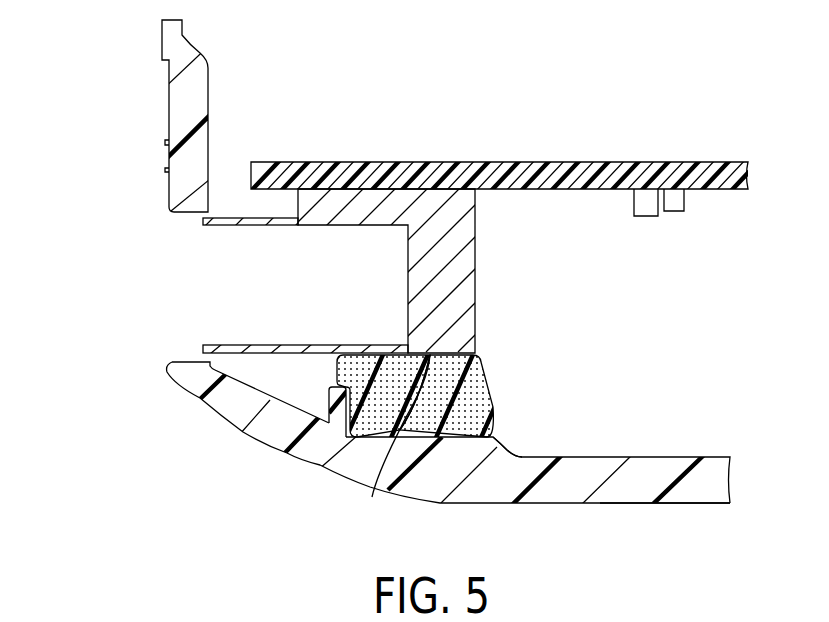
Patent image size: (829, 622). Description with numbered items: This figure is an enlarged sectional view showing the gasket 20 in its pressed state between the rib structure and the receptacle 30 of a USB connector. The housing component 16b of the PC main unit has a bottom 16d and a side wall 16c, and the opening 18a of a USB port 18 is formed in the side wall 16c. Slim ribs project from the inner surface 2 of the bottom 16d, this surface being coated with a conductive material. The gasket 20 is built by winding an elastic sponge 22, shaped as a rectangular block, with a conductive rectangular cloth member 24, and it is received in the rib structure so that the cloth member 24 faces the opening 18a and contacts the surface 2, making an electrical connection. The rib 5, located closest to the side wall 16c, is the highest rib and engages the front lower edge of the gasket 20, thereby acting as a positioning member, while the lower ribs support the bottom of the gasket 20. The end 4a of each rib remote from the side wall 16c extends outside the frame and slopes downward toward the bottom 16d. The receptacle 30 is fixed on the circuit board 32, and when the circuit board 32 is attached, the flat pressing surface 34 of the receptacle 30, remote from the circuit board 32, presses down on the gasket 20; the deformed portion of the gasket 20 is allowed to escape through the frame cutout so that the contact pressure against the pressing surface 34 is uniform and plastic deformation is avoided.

The inner surface 2 is at (655, 457).
The end of rib 4a is at (503, 452).
The rib 5 is at (329, 405).
The housing component 16b is at (240, 458).
The side wall 16c is at (168, 97).
The bottom 16d is at (662, 503).
The USB port 18 is at (118, 290).
The opening 18a is at (187, 212).
The gasket 20 is at (457, 390).
The elastic sponge 22 is at (562, 340).
The conductive cloth member 24 is at (480, 364).
The receptacle 30 is at (475, 247).
The circuit board 32 is at (540, 162).
The pressing surface 34 is at (393, 443).